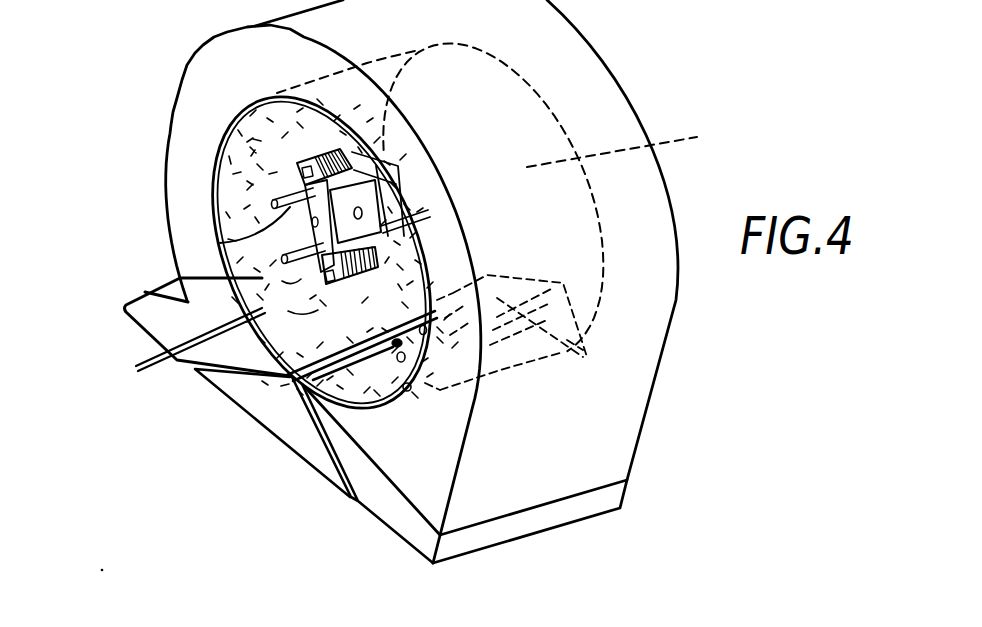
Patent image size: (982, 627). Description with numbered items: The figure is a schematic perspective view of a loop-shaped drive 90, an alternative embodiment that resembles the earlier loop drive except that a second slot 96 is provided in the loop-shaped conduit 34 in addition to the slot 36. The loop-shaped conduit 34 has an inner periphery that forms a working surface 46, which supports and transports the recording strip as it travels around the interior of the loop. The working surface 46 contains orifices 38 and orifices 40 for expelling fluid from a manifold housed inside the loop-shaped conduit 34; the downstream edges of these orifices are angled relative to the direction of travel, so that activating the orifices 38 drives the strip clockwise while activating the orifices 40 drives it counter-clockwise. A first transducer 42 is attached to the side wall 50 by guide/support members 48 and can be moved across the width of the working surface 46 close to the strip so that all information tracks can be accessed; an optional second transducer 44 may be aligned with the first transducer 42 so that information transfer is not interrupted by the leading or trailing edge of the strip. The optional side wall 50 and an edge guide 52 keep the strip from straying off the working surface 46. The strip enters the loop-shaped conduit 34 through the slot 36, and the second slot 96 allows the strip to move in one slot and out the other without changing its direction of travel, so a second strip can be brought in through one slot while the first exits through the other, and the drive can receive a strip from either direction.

The loop-shaped conduit 34 is at (211, 74).
The slot 36 is at (340, 477).
The orifices 38 is at (184, 345).
The orifices 40 is at (342, 248).
The first transducer 42 is at (298, 163).
The second transducer 44 is at (308, 388).
The working surface 46 is at (160, 286).
The guide/support members 48 is at (280, 258).
The side wall 50 is at (636, 143).
The edge guide 52 is at (212, 192).
The loop-shaped drive 90 is at (672, 88).
The second slot 96 is at (223, 370).